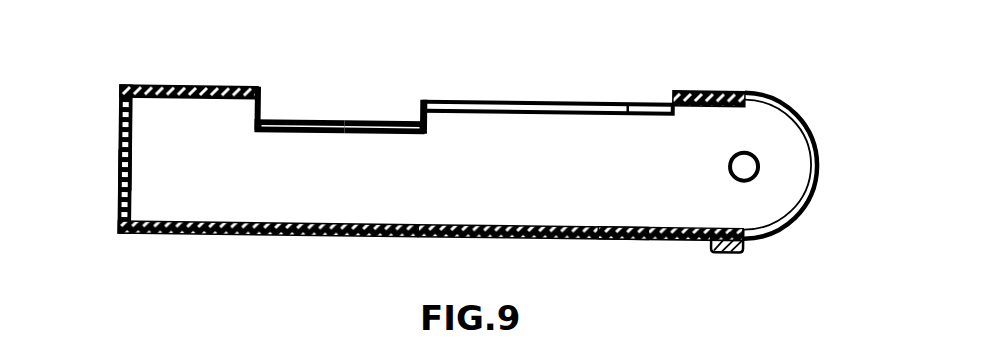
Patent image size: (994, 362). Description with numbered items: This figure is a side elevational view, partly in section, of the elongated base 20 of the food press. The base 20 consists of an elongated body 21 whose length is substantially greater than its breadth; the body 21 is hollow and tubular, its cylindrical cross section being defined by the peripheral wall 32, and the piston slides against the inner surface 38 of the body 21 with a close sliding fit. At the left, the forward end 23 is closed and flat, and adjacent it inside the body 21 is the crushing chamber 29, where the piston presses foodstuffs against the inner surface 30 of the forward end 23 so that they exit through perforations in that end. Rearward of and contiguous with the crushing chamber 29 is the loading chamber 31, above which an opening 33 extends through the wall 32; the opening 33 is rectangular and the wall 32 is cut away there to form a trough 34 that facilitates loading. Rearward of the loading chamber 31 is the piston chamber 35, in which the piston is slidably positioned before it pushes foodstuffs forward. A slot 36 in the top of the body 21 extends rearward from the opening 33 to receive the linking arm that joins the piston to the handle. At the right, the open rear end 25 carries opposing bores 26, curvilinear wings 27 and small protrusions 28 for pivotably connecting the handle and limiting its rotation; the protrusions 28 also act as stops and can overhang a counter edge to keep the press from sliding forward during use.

The base 20 is at (604, 74).
The elongated body 21 is at (243, 193).
The forward end 23 is at (120, 118).
The rear end 25 is at (770, 132).
The bores 26 is at (748, 165).
The curvilinear wings 27 is at (785, 192).
The protrusions 28 is at (740, 252).
The crushing chamber 29 is at (197, 177).
The inner surface 30 is at (128, 186).
The loading chamber 31 is at (345, 180).
The peripheral wall 32 is at (305, 236).
The opening 33 is at (338, 100).
The trough 34 is at (403, 110).
The piston chamber 35 is at (503, 167).
The slot 36 is at (481, 108).
The inner surface 38 is at (605, 227).